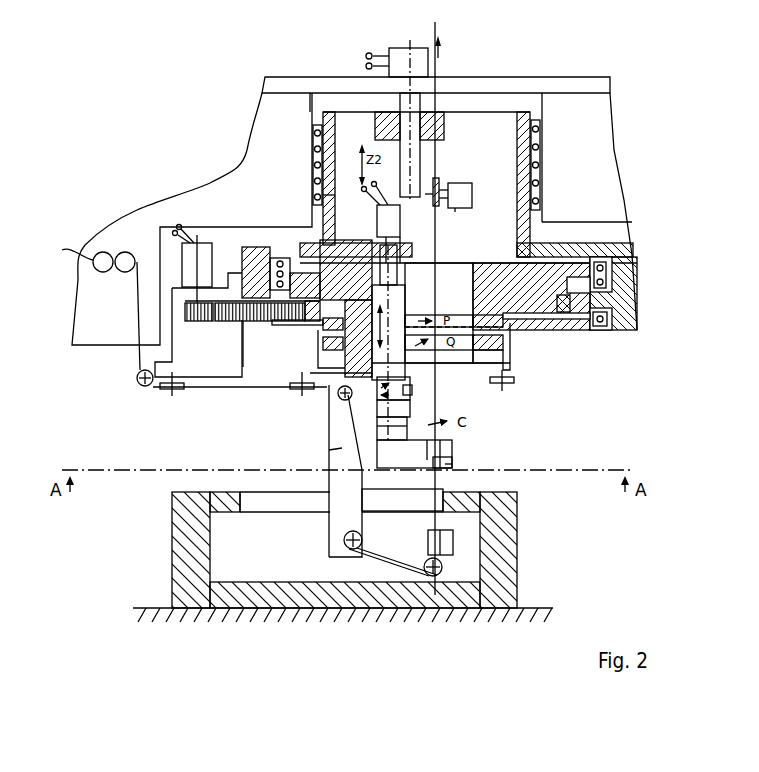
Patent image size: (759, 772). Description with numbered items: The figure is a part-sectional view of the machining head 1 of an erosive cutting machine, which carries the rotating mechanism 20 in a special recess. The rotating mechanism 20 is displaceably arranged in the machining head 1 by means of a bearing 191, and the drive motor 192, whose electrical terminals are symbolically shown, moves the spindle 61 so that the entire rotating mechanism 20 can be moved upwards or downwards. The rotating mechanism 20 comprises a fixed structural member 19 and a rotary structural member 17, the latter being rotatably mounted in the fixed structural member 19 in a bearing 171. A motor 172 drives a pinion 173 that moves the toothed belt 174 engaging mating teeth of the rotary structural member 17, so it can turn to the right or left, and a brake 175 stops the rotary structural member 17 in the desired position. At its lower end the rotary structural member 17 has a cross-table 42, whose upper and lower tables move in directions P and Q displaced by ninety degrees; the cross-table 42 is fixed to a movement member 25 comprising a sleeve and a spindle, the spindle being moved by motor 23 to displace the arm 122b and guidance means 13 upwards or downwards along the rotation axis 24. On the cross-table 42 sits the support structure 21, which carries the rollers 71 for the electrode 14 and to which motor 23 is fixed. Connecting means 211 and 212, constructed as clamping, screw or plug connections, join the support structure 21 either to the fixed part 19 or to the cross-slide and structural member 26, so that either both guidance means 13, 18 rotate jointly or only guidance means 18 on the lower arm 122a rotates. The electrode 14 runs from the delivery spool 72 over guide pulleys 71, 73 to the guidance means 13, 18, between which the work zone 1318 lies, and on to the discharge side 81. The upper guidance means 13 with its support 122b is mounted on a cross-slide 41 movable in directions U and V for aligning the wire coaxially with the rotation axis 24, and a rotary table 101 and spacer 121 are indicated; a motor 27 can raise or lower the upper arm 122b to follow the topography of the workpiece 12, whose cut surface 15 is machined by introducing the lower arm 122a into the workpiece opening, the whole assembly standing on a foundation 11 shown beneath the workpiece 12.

The machining head 1 is at (140, 208).
The drive motor 192 is at (400, 47).
The discharge side 81 is at (449, 49).
The spindle 61 is at (421, 157).
The bearing 191 is at (318, 132).
The motor 27 is at (326, 206).
The connecting means 211 is at (380, 225).
The support structure 21 is at (402, 244).
The guide pulley 73 is at (448, 181).
The motor 23 is at (456, 210).
The fixed structural member 19 is at (520, 228).
The bearing 171 is at (262, 250).
The motor 172 is at (205, 243).
The pinion 173 is at (198, 322).
The toothed belt 174 is at (258, 322).
The brake 175 is at (597, 328).
The rotary structural member 17 is at (480, 270).
The rotation axis 24 is at (440, 301).
The movement member 25 is at (398, 290).
The structural member 26 is at (322, 372).
The cross-table 42 is at (510, 338).
The cross-slide 41 is at (414, 387).
The rotary table 101 is at (418, 411).
The guidance means 13 is at (432, 462).
The spacer 121 is at (446, 437).
The electrode 14 is at (458, 463).
The guidance means support 122a is at (342, 448).
The guidance means support 122b is at (412, 464).
The connecting means 212 is at (327, 393).
The workpiece 12 is at (177, 492).
The cut surface 15 is at (242, 504).
The foundation 11 is at (142, 612).
The guidance means 18 is at (455, 532).
The work zone 1318 is at (438, 498).
The rollers 71 is at (176, 392).
The delivery spool 72 is at (80, 258).
The rotating mechanism 20 is at (750, 318).